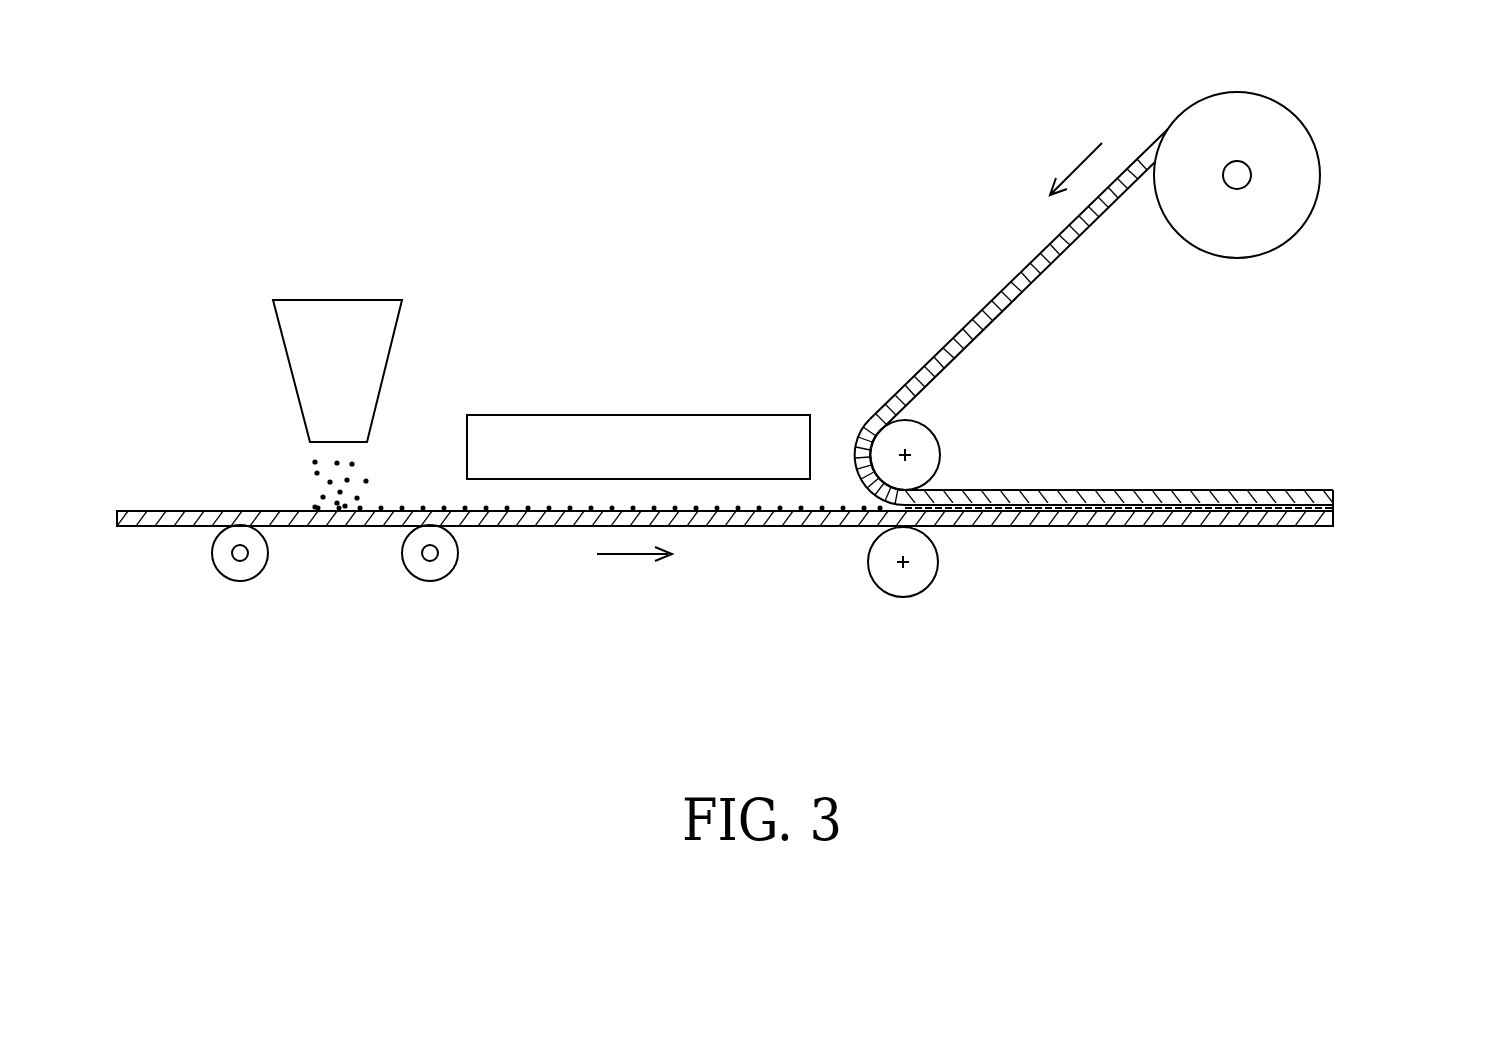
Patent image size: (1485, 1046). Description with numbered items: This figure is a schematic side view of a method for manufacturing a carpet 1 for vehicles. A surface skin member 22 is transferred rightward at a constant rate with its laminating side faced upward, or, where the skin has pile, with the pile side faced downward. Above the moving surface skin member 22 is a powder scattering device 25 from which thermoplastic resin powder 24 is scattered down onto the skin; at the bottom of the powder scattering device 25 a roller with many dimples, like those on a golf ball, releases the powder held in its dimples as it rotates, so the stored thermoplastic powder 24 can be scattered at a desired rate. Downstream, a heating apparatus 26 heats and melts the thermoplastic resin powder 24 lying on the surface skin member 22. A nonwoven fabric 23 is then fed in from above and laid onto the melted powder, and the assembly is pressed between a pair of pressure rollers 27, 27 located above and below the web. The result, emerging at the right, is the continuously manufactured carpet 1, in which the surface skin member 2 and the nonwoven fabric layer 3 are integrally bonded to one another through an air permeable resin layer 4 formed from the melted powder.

The carpet for vehicles 1 is at (1452, 414).
The surface skin member 2 is at (1165, 527).
The nonwoven fabric layer 3 is at (1192, 490).
The air permeable resin layer 4 is at (1336, 503).
The surface skin member 22 is at (152, 527).
The nonwoven fabric 23 is at (1003, 283).
The thermoplastic resin powder 24 is at (430, 510).
The powder scattering device 25 is at (290, 371).
The heating apparatus 26 is at (715, 415).
The pressure rollers 27 is at (943, 657).